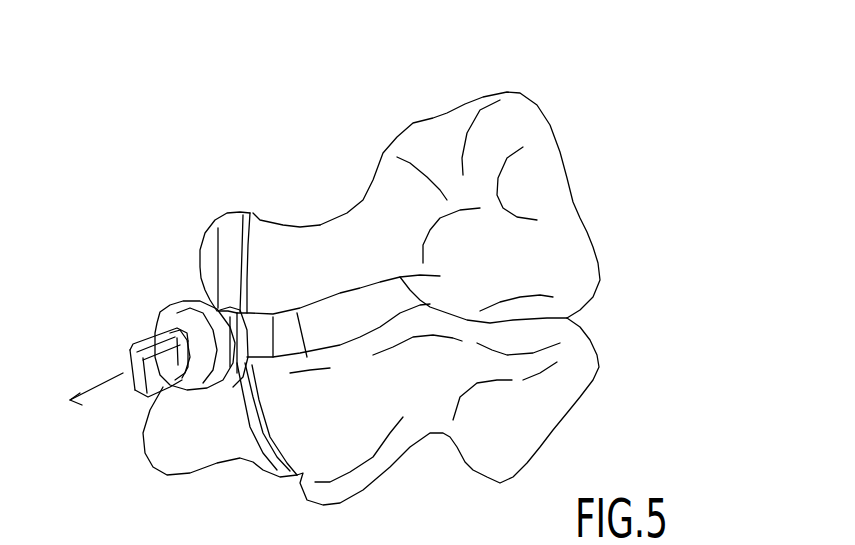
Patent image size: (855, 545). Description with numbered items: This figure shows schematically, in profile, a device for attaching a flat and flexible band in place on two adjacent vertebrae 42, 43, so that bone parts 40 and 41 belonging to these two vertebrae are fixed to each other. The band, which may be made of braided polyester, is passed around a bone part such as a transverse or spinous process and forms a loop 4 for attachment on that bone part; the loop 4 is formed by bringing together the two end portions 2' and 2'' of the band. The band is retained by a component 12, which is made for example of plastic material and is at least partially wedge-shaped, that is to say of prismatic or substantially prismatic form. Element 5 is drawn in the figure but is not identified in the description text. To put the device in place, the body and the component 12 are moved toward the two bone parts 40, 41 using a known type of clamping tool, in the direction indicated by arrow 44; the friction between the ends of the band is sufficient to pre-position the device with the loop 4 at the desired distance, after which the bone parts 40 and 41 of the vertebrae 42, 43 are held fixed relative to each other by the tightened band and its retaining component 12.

The vertebra 43 is at (460, 171).
The bone part 41 is at (338, 253).
The loop 4 is at (218, 223).
The component 12 is at (169, 329).
The fastening element 5 is at (185, 273).
The end portion of the band 2'' is at (120, 360).
The end portion of the band 2' is at (143, 403).
The arrow 44 is at (86, 411).
The bone part 40 is at (220, 454).
The vertebra 42 is at (448, 431).